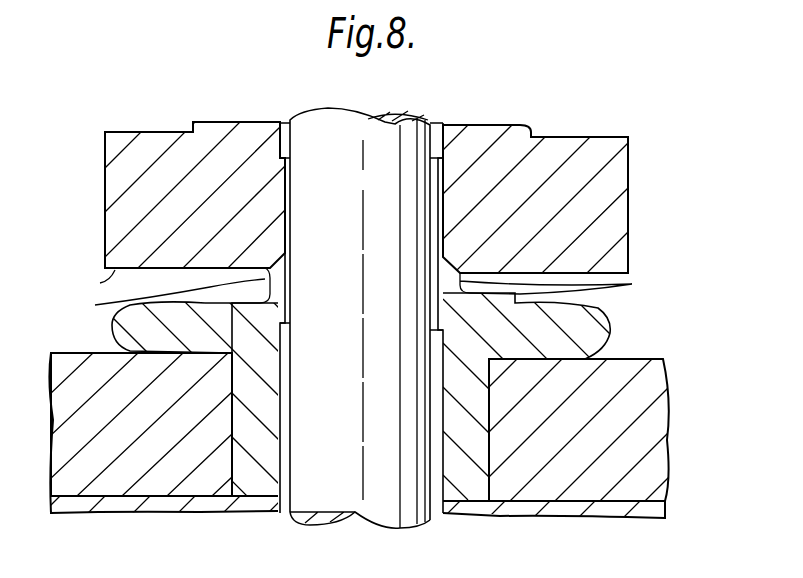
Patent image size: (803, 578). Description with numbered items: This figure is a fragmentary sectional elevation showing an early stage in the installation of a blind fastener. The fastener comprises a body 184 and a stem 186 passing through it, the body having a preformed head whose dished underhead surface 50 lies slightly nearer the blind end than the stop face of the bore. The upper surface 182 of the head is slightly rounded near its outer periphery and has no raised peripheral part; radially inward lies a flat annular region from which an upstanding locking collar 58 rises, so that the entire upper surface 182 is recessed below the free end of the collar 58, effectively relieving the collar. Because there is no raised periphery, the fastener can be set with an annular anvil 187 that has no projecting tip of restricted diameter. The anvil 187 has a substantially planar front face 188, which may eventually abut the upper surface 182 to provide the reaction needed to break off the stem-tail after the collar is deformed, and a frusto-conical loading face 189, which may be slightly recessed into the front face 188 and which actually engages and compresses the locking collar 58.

The dished underhead surface 50 is at (670, 432).
The upstanding locking collar 58 is at (560, 284).
The upper surface 182 is at (598, 306).
The body 184 is at (250, 512).
The stem 186 is at (383, 528).
The annular anvil 187 is at (105, 231).
The front face 188 is at (100, 283).
The frusto-conical loading face 189 is at (95, 305).